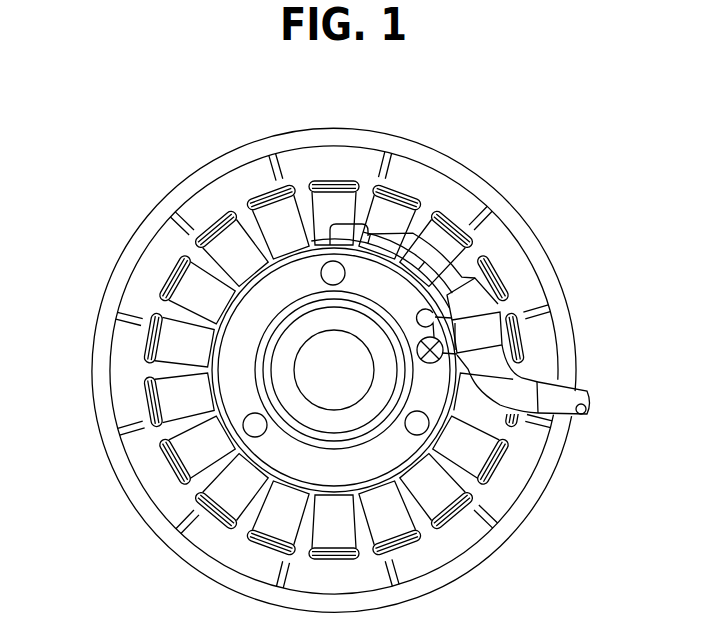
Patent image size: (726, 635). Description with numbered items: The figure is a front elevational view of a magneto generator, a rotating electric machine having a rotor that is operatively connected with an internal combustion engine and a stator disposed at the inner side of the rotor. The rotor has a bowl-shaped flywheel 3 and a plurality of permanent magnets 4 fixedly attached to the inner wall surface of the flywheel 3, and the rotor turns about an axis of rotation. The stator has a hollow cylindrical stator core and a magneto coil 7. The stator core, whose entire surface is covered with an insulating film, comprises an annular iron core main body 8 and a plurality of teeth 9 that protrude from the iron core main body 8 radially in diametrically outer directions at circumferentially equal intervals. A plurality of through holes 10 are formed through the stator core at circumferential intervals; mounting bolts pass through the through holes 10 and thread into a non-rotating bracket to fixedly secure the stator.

The flywheel 3 is at (534, 233).
The permanent magnets 4 is at (432, 190).
The magneto coil 7 is at (470, 447).
The iron core main body 8 is at (235, 385).
The teeth 9 is at (265, 189).
The through holes 10 is at (327, 270).